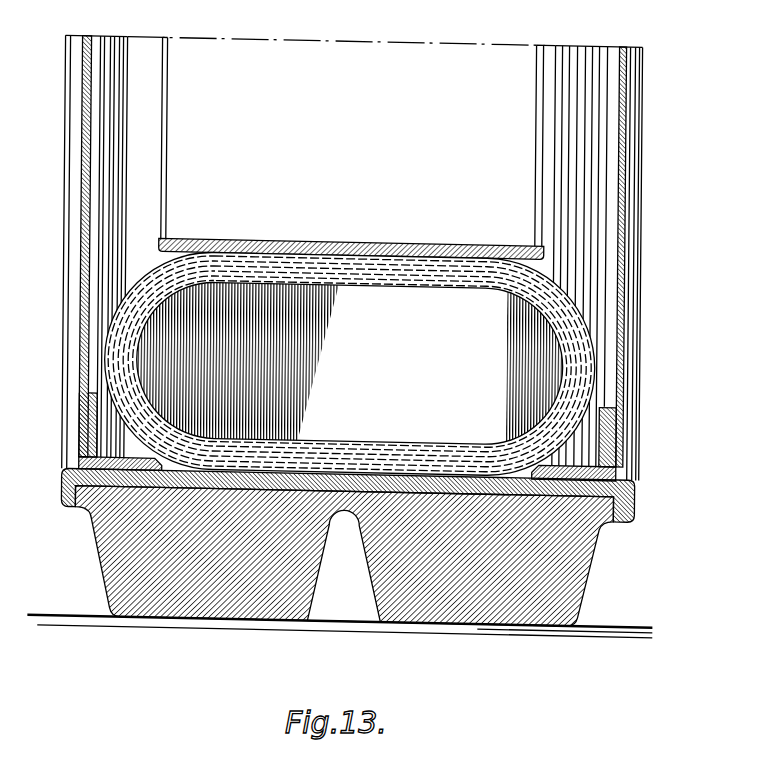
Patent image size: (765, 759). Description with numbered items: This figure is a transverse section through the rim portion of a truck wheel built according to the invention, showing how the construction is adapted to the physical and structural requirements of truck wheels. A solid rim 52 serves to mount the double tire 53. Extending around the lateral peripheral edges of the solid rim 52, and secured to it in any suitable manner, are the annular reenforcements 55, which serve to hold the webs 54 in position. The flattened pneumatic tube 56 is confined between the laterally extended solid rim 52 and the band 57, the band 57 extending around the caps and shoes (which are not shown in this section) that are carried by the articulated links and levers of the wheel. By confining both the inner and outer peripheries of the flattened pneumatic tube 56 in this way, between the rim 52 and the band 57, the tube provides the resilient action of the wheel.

The solid rim 52 is at (63, 494).
The double tire 53 is at (120, 568).
The web 54 is at (78, 305).
The annular reenforcement 55 is at (79, 428).
The flattened pneumatic tube 56 is at (458, 276).
The band 57 is at (431, 249).